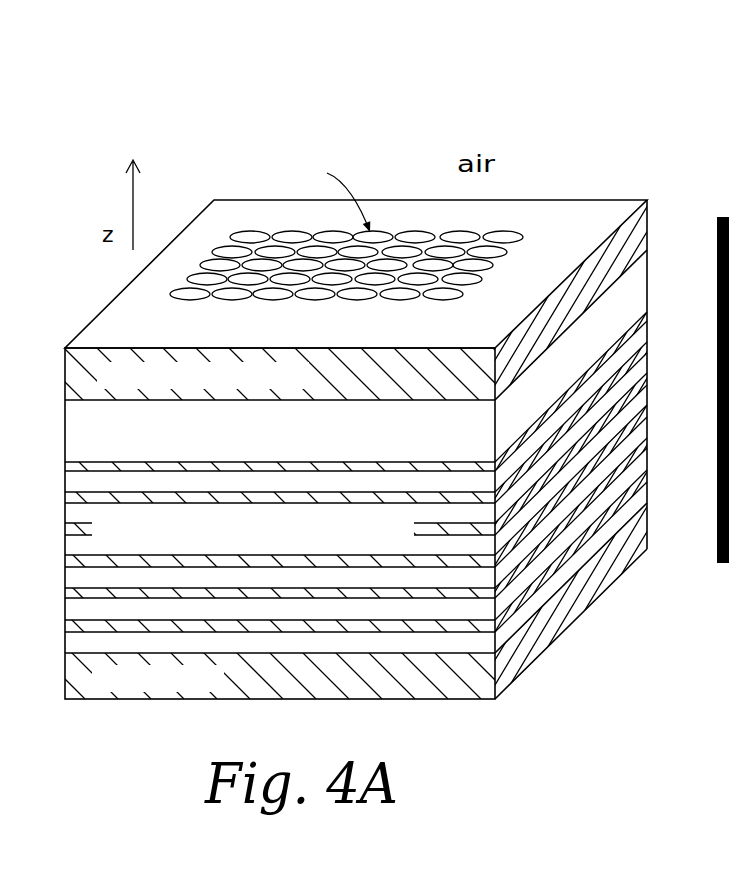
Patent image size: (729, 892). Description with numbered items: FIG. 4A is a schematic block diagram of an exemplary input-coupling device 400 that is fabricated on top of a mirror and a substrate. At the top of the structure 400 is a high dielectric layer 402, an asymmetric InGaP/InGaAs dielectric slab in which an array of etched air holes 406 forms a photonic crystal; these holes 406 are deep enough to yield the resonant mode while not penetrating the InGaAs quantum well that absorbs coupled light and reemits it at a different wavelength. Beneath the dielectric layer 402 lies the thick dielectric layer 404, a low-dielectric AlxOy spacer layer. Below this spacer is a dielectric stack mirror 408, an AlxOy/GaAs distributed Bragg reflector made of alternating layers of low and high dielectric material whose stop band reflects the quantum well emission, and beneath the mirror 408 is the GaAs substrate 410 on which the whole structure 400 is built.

The input-coupling device 400 is at (452, 87).
The dielectric layer 402 is at (610, 212).
The thick dielectric layer 404 is at (638, 283).
The holes 406 is at (508, 240).
The dielectric stack mirror 408 is at (587, 455).
The substrate 410 is at (532, 647).